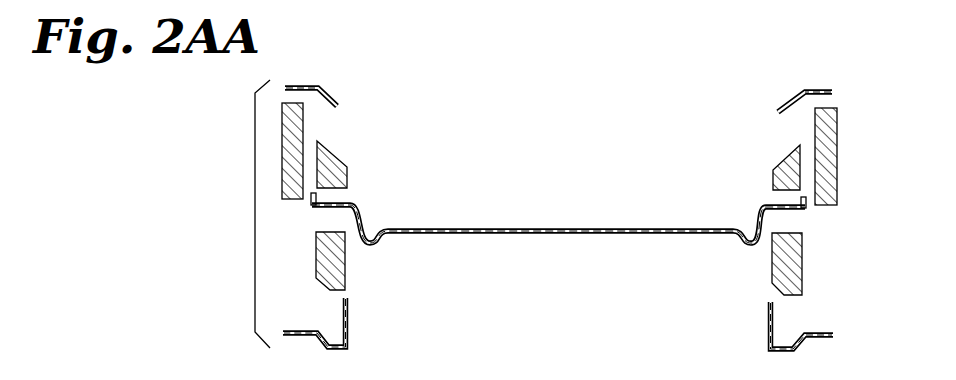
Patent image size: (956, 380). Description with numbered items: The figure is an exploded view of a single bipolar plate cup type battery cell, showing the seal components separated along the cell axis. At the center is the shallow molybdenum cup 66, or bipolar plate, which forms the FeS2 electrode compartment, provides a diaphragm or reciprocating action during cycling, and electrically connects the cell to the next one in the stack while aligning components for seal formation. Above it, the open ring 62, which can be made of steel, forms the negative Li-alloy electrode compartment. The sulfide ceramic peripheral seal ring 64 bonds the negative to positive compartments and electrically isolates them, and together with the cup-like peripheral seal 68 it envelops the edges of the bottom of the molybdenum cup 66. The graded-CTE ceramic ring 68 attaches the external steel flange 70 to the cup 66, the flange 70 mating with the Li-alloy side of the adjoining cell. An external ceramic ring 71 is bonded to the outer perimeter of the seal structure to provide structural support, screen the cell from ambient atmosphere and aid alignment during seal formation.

The open ring 62 is at (331, 99).
The peripheral seal ring 64 is at (323, 151).
The molybdenum cup 66 is at (562, 226).
The cup-like peripheral seal 68 is at (340, 263).
The external steel flange 70 is at (348, 321).
The external ceramic ring 71 is at (831, 156).